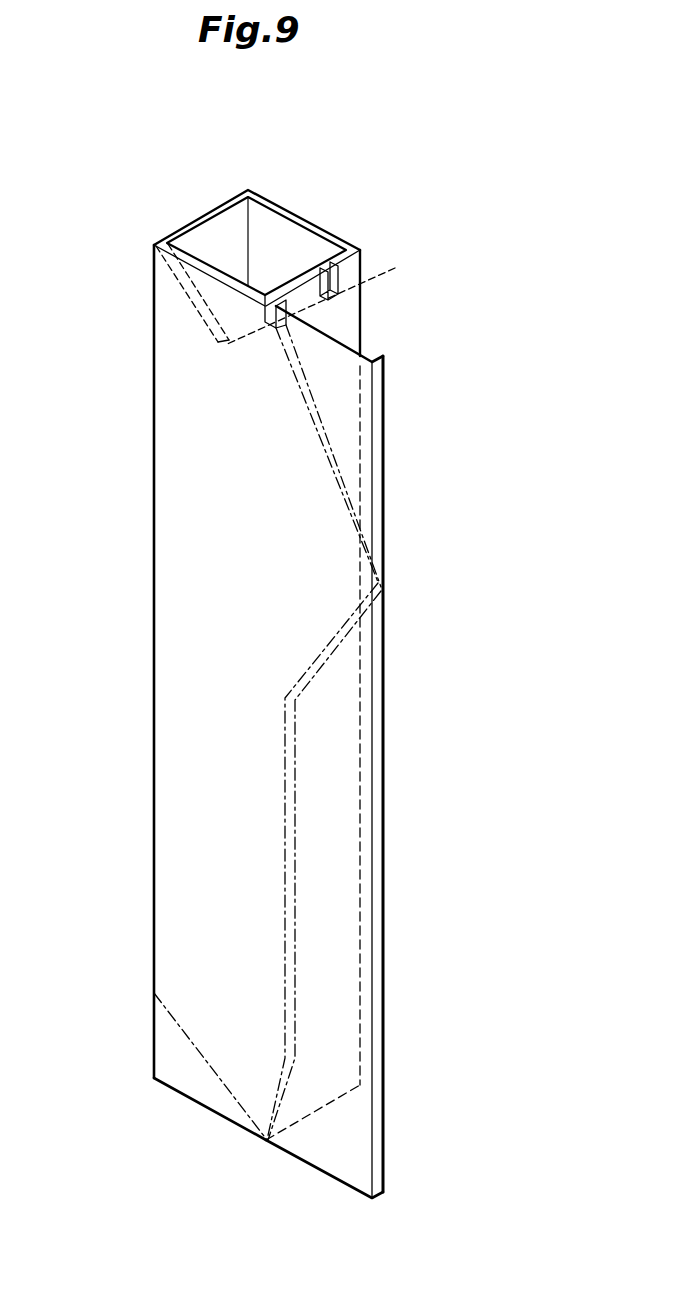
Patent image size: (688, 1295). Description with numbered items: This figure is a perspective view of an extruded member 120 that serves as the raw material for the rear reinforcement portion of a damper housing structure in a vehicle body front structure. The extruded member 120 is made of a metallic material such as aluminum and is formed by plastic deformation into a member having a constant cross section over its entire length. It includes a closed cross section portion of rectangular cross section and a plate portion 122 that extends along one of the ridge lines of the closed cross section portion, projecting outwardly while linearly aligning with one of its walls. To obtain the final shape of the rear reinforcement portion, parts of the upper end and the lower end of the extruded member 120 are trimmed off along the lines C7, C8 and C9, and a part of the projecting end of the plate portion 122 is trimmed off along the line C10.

The extruded member 120 is at (386, 349).
The plate portion 122 is at (360, 1140).
The line C7 is at (195, 298).
The line C8 is at (322, 304).
The line C9 is at (200, 1052).
The line C10 is at (295, 938).